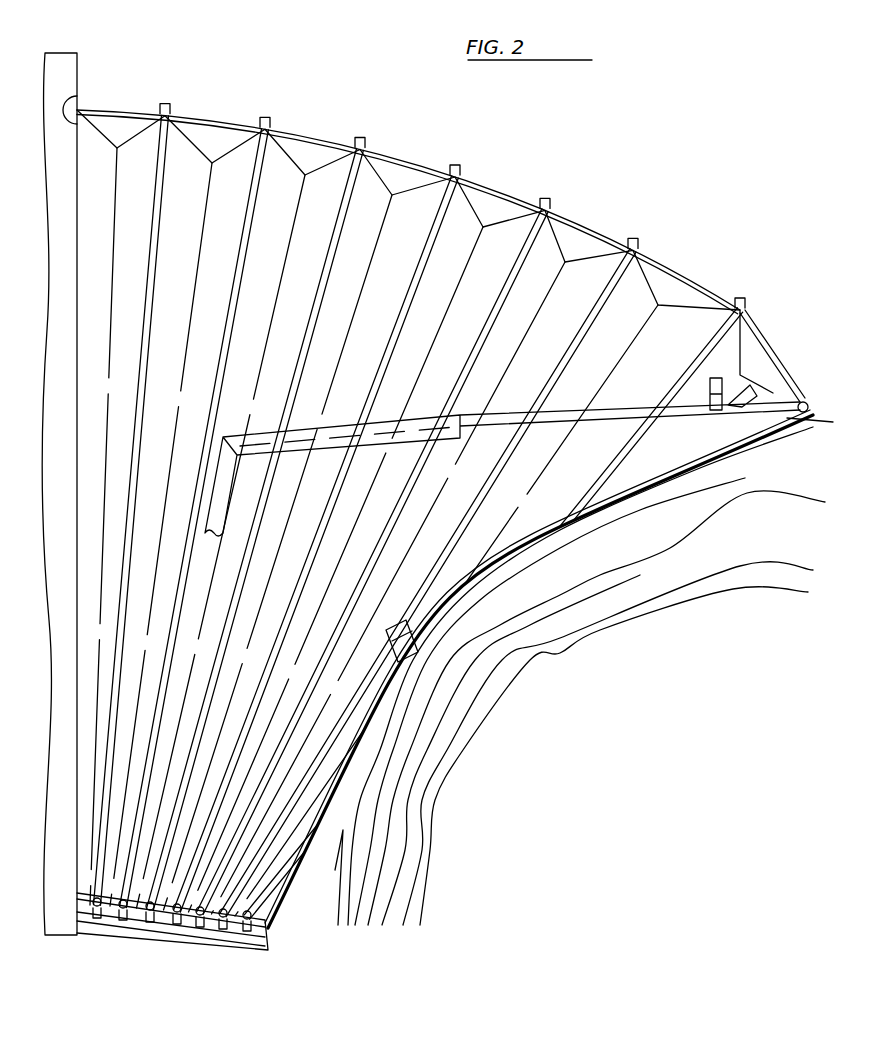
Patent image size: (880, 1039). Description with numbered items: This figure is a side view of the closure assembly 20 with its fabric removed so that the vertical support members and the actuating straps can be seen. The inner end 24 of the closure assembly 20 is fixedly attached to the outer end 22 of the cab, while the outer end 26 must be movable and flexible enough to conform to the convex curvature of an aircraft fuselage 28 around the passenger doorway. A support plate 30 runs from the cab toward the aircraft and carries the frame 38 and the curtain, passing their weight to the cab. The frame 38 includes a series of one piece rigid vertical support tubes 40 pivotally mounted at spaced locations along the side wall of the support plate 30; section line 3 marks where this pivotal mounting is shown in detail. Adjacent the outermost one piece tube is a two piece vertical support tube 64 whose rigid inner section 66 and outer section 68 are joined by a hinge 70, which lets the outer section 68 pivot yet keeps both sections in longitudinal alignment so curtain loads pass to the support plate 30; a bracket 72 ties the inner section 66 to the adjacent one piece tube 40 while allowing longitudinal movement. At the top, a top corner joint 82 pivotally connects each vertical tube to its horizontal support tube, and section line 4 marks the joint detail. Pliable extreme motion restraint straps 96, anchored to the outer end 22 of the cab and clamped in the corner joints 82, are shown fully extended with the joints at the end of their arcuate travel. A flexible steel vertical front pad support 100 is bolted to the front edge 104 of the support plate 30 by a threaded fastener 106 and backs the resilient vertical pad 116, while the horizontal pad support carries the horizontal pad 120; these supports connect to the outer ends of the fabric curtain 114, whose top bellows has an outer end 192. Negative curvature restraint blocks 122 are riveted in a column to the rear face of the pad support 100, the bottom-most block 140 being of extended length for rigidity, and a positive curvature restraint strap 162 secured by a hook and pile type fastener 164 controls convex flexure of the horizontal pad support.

The closure assembly 20 is at (506, 128).
The outer end of cab 22 is at (77, 64).
The inner end of closure assembly 24 is at (77, 108).
The outer end of closure assembly 26 is at (283, 936).
The aircraft fuselage 28 is at (337, 923).
The support plate 30 is at (122, 936).
The frame 38 is at (280, 133).
The vertical support tube 40 is at (178, 122).
The two piece vertical support tube 64 is at (252, 947).
The inner section 66 is at (320, 851).
The outer section 68 is at (455, 555).
The hinge 70 is at (432, 585).
The bracket 72 is at (420, 645).
The top corner joint 82 is at (170, 112).
The extreme motion restraint strap 96 is at (392, 160).
The vertical front pad support 100 is at (363, 753).
The front edge of support plate 104 is at (263, 942).
The threaded fastener 106 is at (273, 934).
The fabric curtain 114 is at (520, 200).
The vertical pad 116 is at (352, 798).
The horizontal pad 120 is at (806, 410).
The negative curvature restraint block 122 is at (493, 537).
The bottom-most negative curvature restraint block 140 is at (350, 773).
The positive curvature restraint strap 162 is at (745, 396).
The hook and pile type fastener 164 is at (770, 400).
The outer end of top bellows 192 is at (728, 384).
The section line 3- 3 is at (103, 820).
The section line 4- 4 is at (171, 20).